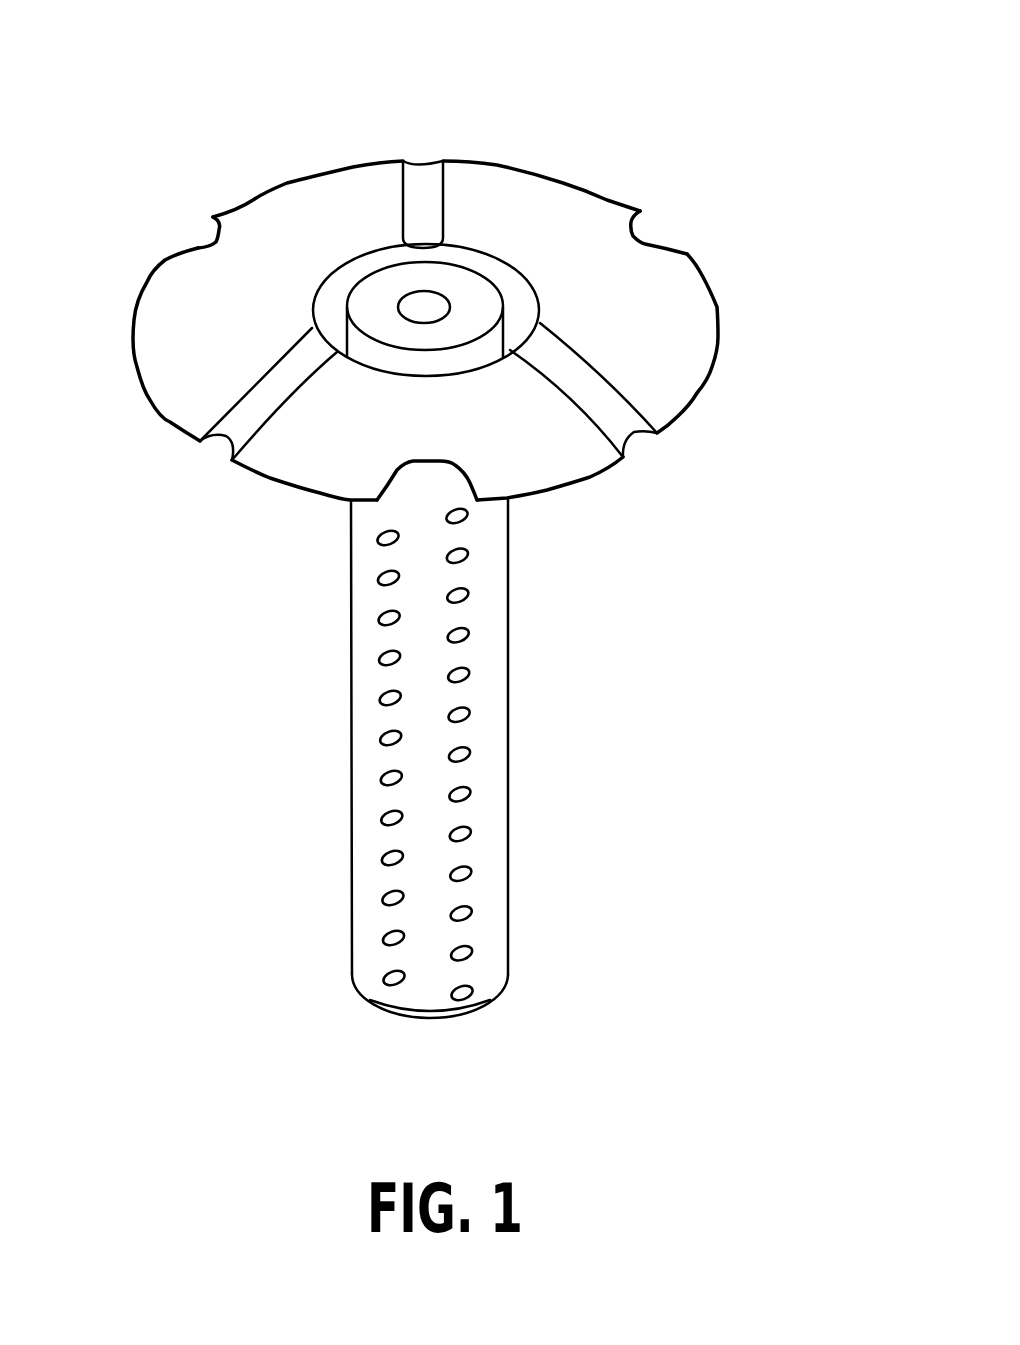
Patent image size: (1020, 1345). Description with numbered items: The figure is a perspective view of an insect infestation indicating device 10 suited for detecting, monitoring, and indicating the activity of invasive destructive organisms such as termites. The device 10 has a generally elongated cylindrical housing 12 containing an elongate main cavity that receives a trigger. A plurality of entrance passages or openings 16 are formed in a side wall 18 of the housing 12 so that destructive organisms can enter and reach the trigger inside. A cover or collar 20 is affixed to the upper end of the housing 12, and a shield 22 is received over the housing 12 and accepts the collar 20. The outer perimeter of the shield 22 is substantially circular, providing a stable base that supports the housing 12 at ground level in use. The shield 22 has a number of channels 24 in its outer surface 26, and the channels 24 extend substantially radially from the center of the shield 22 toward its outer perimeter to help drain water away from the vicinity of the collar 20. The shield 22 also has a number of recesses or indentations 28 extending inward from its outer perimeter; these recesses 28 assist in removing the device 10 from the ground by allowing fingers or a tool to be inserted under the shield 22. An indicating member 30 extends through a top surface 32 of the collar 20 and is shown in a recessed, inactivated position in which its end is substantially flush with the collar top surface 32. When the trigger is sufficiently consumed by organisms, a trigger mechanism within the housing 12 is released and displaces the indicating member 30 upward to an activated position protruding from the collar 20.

The insect infestation indicating device 10 is at (623, 77).
The housing 12 is at (517, 712).
The entrance passages or openings 16 is at (380, 777).
The side wall 18 is at (490, 816).
The cover or collar 20 is at (445, 278).
The shield 22 is at (688, 313).
The channels 24 is at (417, 163).
The outer surface 26 is at (160, 318).
The recesses or indentations 28 is at (200, 235).
The indicating member 30 is at (422, 305).
The top surface 32 is at (405, 335).